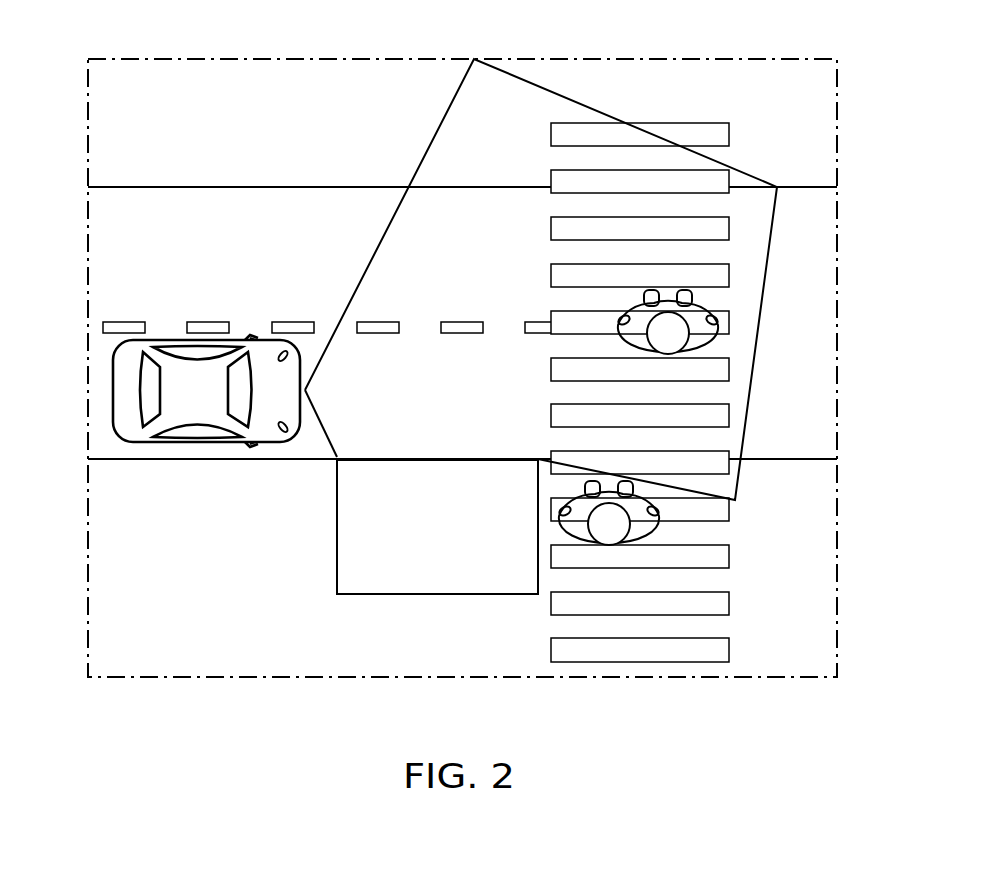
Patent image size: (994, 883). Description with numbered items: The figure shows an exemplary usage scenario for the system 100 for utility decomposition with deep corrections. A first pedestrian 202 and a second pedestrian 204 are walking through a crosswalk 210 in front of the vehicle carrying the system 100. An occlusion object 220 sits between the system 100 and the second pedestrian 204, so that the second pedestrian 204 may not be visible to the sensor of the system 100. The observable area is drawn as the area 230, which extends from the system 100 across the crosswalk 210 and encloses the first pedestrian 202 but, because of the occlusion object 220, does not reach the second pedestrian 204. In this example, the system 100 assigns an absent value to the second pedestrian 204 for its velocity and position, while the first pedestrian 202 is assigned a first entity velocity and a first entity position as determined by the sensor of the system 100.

The system for utility decomposition with deep corrections 100 is at (113, 386).
The first pedestrian 202 is at (718, 338).
The second pedestrian 204 is at (655, 538).
The crosswalk 210 is at (662, 85).
The occlusion object 220 is at (397, 594).
The area 230 is at (493, 80).